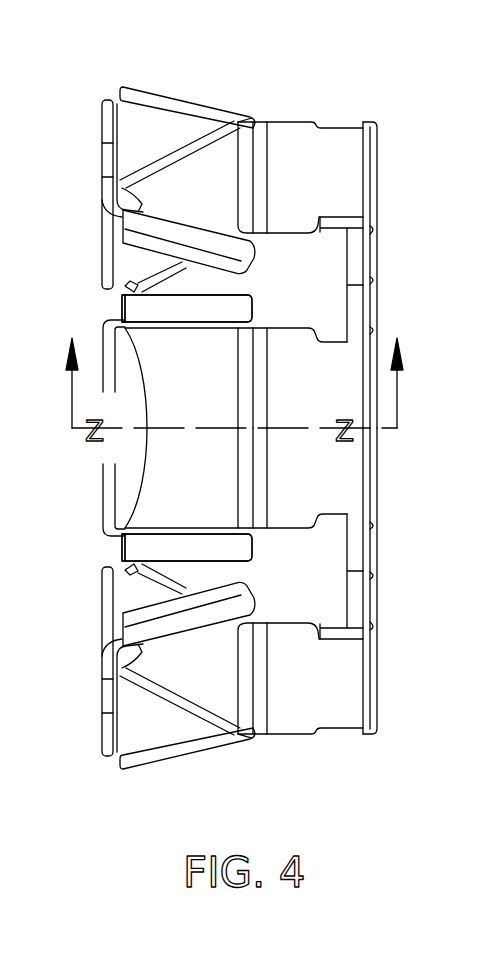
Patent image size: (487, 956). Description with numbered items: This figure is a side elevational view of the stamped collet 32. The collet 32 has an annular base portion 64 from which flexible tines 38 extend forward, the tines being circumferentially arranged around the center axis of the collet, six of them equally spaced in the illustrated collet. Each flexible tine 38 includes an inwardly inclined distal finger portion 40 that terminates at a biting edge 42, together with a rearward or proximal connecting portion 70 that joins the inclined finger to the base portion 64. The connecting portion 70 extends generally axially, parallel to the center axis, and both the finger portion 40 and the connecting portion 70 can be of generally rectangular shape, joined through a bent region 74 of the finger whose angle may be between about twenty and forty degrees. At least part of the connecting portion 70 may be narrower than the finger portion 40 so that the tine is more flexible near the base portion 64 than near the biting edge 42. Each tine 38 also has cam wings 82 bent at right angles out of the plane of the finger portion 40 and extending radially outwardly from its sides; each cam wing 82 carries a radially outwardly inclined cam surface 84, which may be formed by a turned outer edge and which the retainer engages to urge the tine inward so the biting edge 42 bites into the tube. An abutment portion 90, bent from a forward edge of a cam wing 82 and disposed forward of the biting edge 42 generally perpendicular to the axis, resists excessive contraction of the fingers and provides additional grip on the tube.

The collet 32 is at (257, 418).
The flexible tines 38 is at (284, 106).
The inwardly inclined distal finger portion 40 is at (178, 399).
The biting edge 42 is at (143, 455).
The annular base portion 64 is at (373, 563).
The connecting portion 70 is at (343, 173).
The bent region 74 is at (247, 712).
The cam wings 82 is at (143, 88).
The cam surface 84 is at (193, 103).
The abutment portion 90 is at (103, 707).